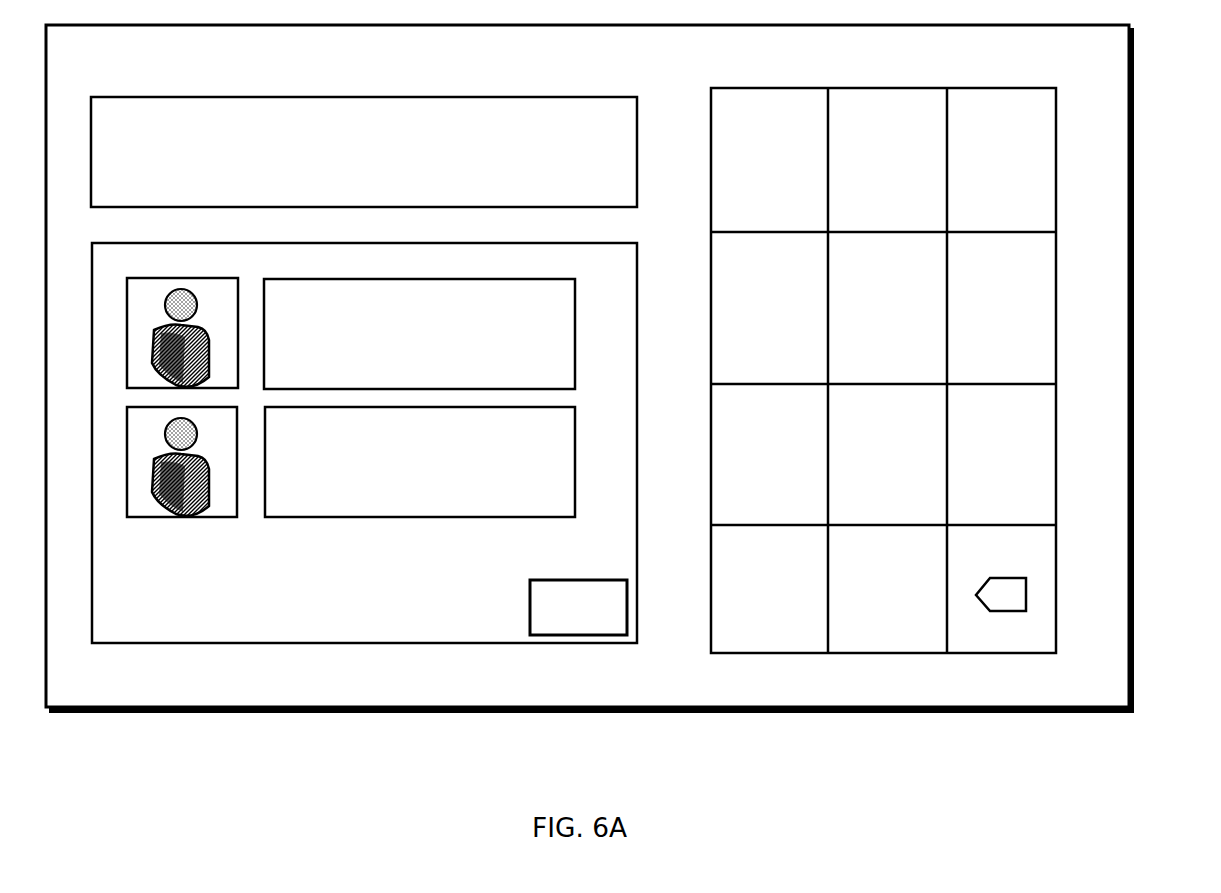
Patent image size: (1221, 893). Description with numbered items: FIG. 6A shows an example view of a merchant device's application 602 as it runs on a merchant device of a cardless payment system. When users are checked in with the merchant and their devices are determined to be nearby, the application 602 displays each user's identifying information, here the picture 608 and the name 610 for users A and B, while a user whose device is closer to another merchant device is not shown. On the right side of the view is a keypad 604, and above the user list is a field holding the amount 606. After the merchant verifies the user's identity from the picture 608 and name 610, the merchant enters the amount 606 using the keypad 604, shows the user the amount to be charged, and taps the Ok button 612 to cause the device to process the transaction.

The merchant device's application 602 is at (1135, 133).
The keypad 604 is at (1057, 208).
The amount 606 is at (423, 151).
The picture 608 is at (181, 519).
The name 610 is at (419, 519).
The Ok button 612 is at (602, 637).